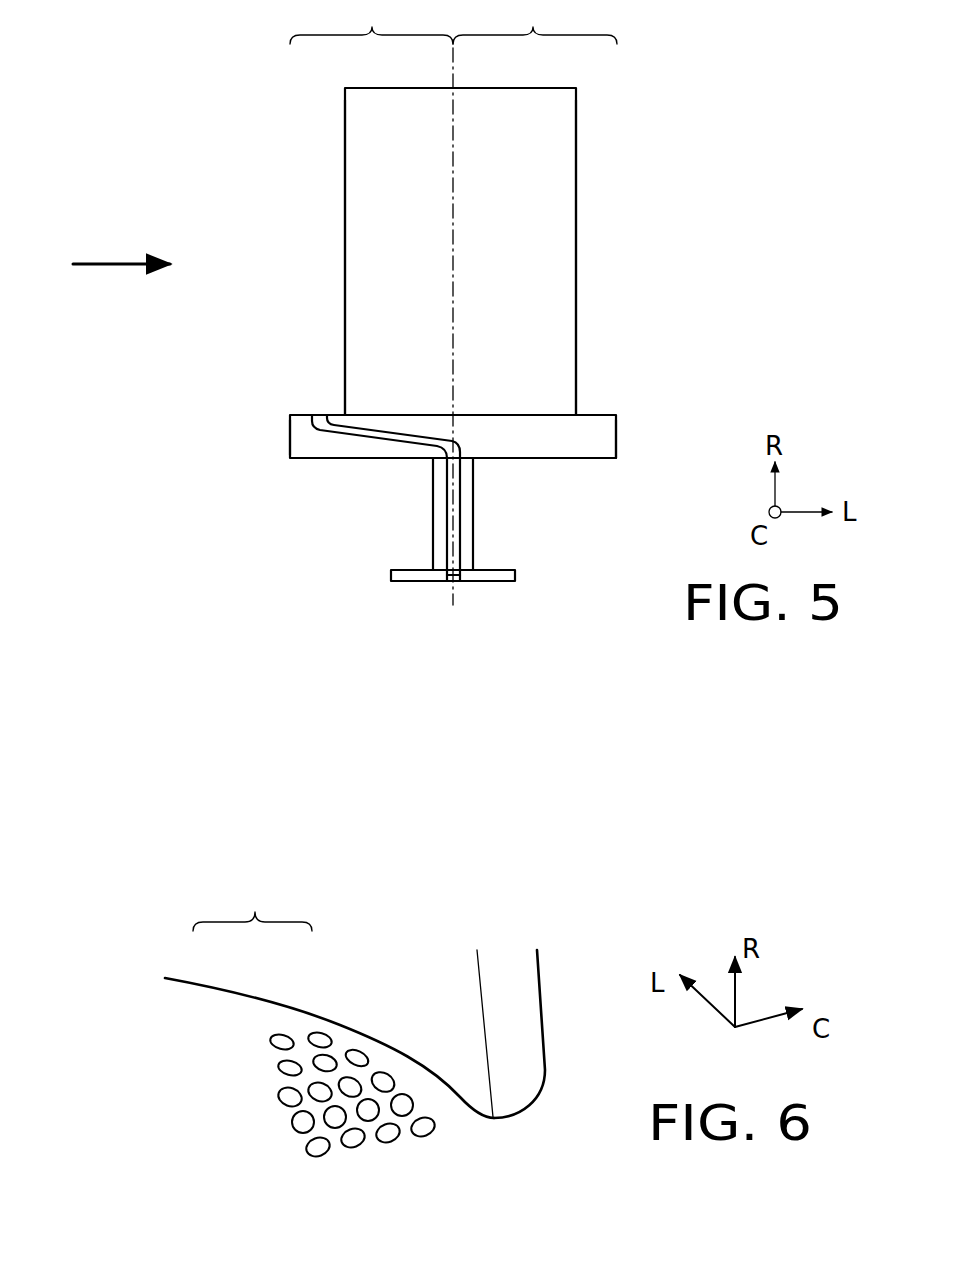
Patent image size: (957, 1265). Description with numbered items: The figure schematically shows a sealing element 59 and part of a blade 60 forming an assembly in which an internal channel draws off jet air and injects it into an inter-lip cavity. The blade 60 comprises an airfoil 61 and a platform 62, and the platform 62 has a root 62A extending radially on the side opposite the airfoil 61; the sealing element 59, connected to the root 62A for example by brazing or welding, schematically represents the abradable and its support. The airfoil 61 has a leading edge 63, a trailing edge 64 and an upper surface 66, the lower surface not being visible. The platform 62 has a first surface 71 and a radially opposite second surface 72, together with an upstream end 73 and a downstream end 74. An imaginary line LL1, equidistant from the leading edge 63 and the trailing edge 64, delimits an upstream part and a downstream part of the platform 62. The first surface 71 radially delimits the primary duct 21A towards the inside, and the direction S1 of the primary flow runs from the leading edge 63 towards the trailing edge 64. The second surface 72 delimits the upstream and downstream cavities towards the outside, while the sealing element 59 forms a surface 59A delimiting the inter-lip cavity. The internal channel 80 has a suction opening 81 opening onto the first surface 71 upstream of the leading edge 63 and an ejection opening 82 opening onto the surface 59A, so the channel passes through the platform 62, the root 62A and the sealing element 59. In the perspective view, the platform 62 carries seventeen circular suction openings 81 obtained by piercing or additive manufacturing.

In FIG. 5, the blade 60 is at (302, 70).
In FIG. 6, the blade 60 is at (329, 995).
In FIG. 5, the airfoil 61 is at (558, 92).
In FIG. 6, the airfoil 61 is at (307, 992).
In FIG. 5, the platform 62 is at (593, 415).
In FIG. 6, the platform 62 is at (227, 1017).
In FIG. 5, the root 62A is at (475, 513).
In FIG. 5, the leading edge 63 is at (342, 212).
In FIG. 6, the leading edge 63 is at (486, 989).
In FIG. 5, the trailing edge 64 is at (580, 267).
In FIG. 5, the upper surface 66 is at (545, 169).
In FIG. 5, the first surface 71 is at (296, 411).
In FIG. 6, the first surface 71 is at (358, 1034).
In FIG. 5, the second surface 72 is at (296, 464).
In FIG. 5, the upstream end 73 is at (293, 433).
In FIG. 5, the downstream end 74 is at (616, 430).
In FIG. 5, the internal channel 80 is at (370, 435).
In FIG. 5, the suction opening 81 is at (320, 413).
In FIG. 6, the suction opening 81 is at (323, 1147).
In FIG. 5, the ejection opening 82 is at (457, 582).
In FIG. 5, the sealing element 59 is at (390, 573).
In FIG. 5, the surface 59A is at (416, 585).
In FIG. 5, the direction of flow S1 is at (123, 263).
In FIG. 5, the primary duct 21A is at (300, 268).
In FIG. 5, the imaginary line LL1 is at (452, 215).